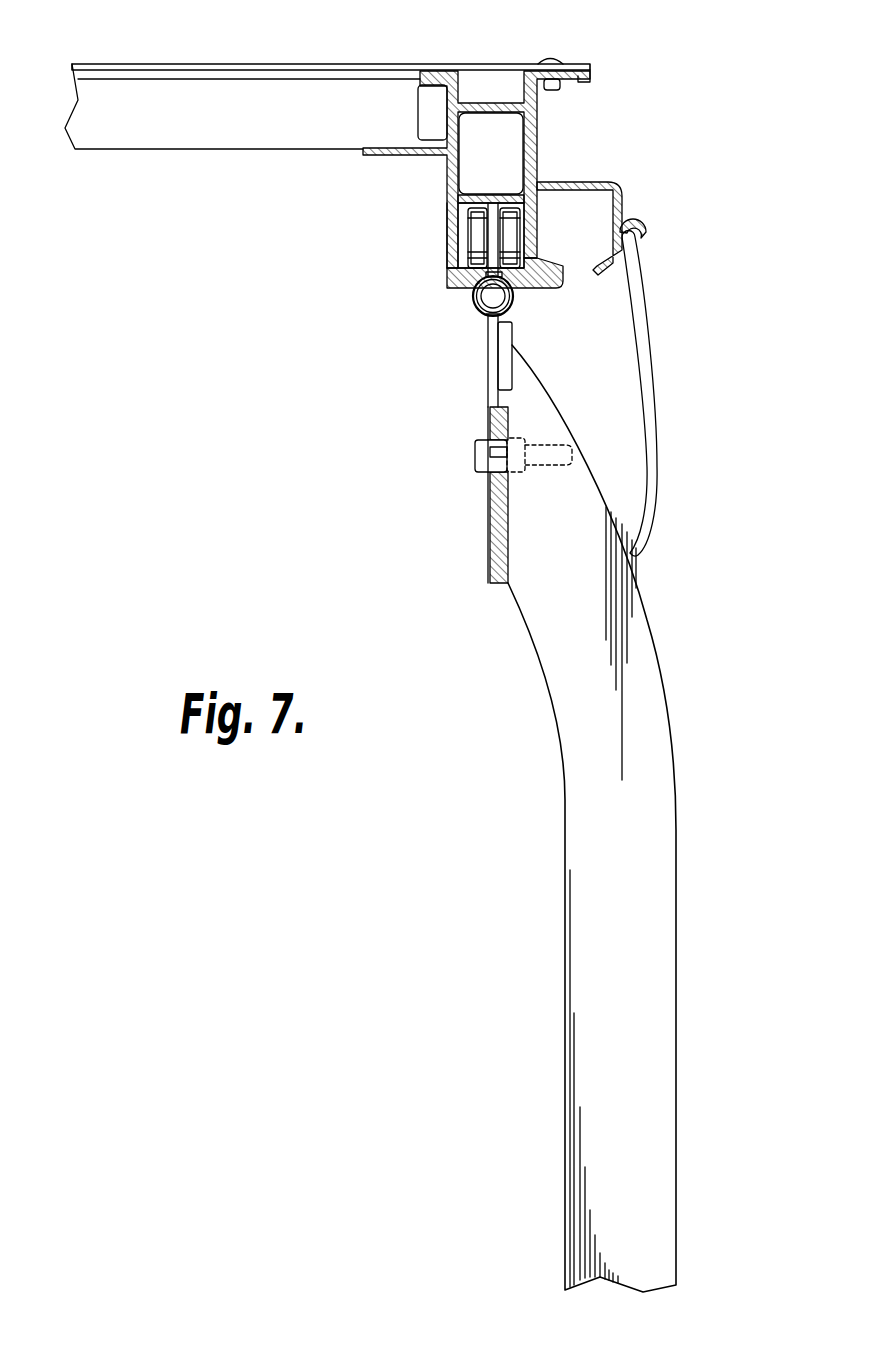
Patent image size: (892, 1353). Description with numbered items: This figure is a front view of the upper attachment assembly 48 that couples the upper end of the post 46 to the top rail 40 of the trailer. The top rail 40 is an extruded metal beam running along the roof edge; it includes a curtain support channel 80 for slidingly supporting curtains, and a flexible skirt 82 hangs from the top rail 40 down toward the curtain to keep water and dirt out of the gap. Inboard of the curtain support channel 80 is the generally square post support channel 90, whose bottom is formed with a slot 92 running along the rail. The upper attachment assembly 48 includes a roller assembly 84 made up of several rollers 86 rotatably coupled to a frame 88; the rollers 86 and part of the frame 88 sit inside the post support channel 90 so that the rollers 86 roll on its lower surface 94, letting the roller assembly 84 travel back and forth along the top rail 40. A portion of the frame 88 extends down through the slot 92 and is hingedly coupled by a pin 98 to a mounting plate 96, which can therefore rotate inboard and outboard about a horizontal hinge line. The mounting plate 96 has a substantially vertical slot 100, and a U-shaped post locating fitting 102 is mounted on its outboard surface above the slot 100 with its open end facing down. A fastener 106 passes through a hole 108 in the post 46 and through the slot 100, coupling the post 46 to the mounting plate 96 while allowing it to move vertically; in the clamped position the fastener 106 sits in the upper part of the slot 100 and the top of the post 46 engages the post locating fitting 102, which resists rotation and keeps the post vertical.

The top rail 40 is at (487, 103).
The post 46 is at (678, 858).
The upper attachment assembly 48 is at (313, 338).
The curtain support channel 80 is at (582, 220).
The flexible skirt 82 is at (652, 358).
The roller assembly 84 is at (458, 239).
The rollers 86 is at (518, 224).
The frame 88 is at (490, 216).
The post support channel 90 is at (538, 133).
The slot 92 is at (528, 287).
The lower surface 94 is at (450, 256).
The mounting plate 96 is at (490, 381).
The pin 98 is at (490, 296).
The slot 100 is at (492, 508).
The post locating fitting 102 is at (503, 348).
The fastener 106 is at (475, 452).
The hole 108 is at (508, 432).